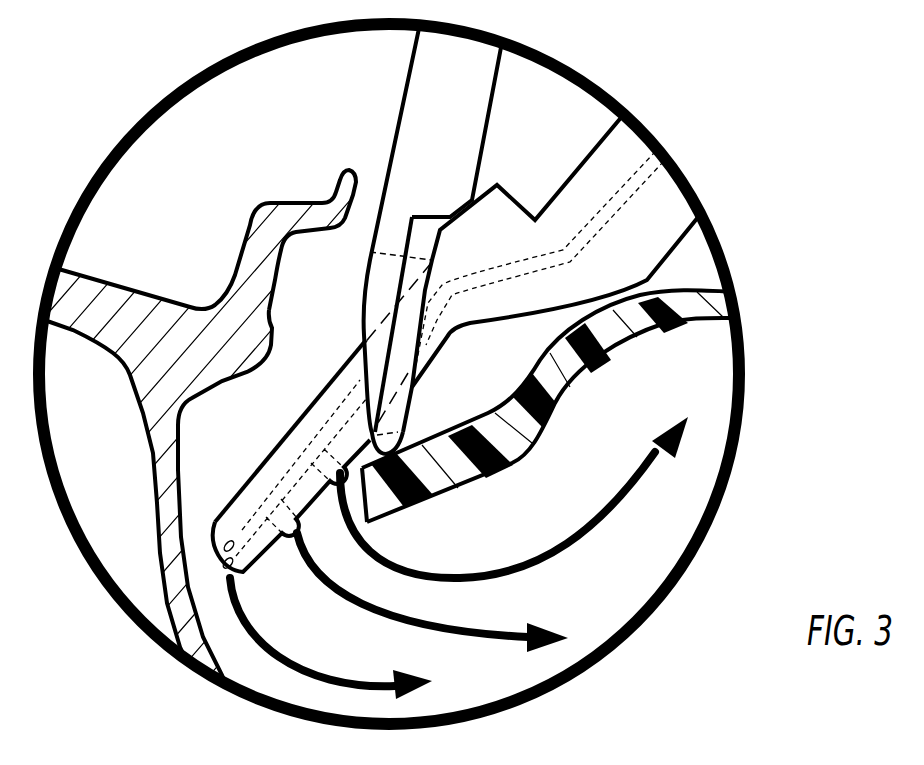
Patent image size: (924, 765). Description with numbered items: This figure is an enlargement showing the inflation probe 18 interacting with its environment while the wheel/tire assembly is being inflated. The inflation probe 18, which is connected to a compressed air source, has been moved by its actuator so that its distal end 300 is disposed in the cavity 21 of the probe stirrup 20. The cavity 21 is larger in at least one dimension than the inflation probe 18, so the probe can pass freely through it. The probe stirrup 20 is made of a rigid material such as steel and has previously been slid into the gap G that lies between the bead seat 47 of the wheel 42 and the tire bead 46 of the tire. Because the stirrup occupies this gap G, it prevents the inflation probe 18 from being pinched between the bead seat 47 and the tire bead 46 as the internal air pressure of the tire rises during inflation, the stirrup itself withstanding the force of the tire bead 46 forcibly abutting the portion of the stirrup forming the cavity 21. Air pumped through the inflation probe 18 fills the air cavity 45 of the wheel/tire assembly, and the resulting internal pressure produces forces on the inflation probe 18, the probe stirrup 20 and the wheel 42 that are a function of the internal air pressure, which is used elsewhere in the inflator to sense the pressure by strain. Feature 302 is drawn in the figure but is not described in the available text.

The inflation probe 18 is at (590, 151).
The probe stirrup 20 is at (403, 92).
The cavity 21 is at (381, 301).
The wheel 42 is at (137, 368).
The air cavity 45 is at (643, 537).
The tire bead 46 is at (381, 497).
The bead seat 47 is at (284, 251).
The distal end 300 is at (287, 436).
The valve member 302 is at (354, 308).
The gap G is at (291, 355).